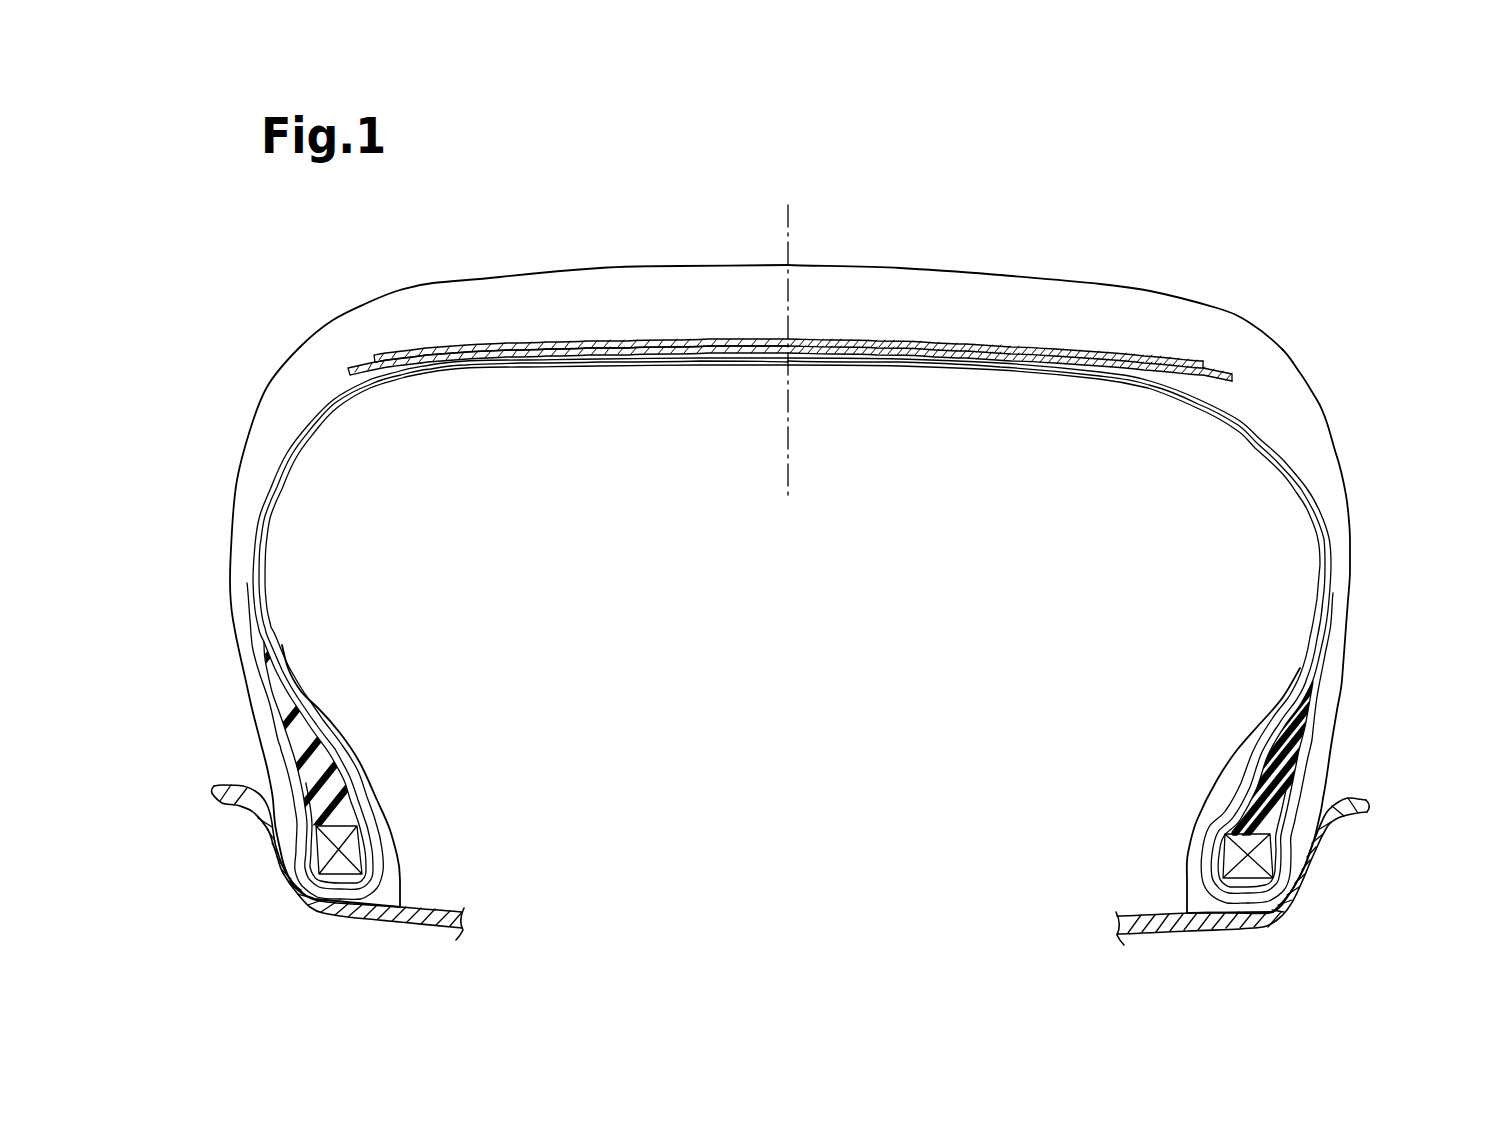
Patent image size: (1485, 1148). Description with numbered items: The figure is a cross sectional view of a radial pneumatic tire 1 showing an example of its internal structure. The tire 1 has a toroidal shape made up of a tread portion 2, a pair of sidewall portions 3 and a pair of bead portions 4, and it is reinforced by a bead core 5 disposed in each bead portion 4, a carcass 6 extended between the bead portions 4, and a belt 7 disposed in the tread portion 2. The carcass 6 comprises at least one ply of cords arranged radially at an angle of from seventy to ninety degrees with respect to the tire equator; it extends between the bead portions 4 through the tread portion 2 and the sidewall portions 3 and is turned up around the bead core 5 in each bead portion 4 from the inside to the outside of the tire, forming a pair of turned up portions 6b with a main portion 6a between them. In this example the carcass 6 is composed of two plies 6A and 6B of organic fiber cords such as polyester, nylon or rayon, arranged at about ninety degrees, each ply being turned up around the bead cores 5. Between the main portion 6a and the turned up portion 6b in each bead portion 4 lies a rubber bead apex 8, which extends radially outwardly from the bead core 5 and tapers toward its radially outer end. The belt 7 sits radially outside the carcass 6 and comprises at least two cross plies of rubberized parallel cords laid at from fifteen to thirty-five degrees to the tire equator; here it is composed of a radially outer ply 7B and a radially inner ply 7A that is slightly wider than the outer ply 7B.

The pneumatic tire 1 is at (1265, 281).
The tread portion 2 is at (930, 267).
The sidewall portion 3 is at (1350, 521).
The bead portion 4 is at (1168, 842).
The bead core 5 is at (1262, 858).
The carcass 6 is at (1103, 455).
The carcass ply 6A is at (1262, 440).
The carcass ply 6B is at (1280, 465).
The main portion 6a is at (1327, 570).
The turned up portion 6b is at (1313, 718).
The belt 7 is at (534, 483).
The radially inner ply 7A is at (510, 353).
The radially outer ply 7B is at (570, 355).
The rubber bead apex 8 is at (1268, 765).